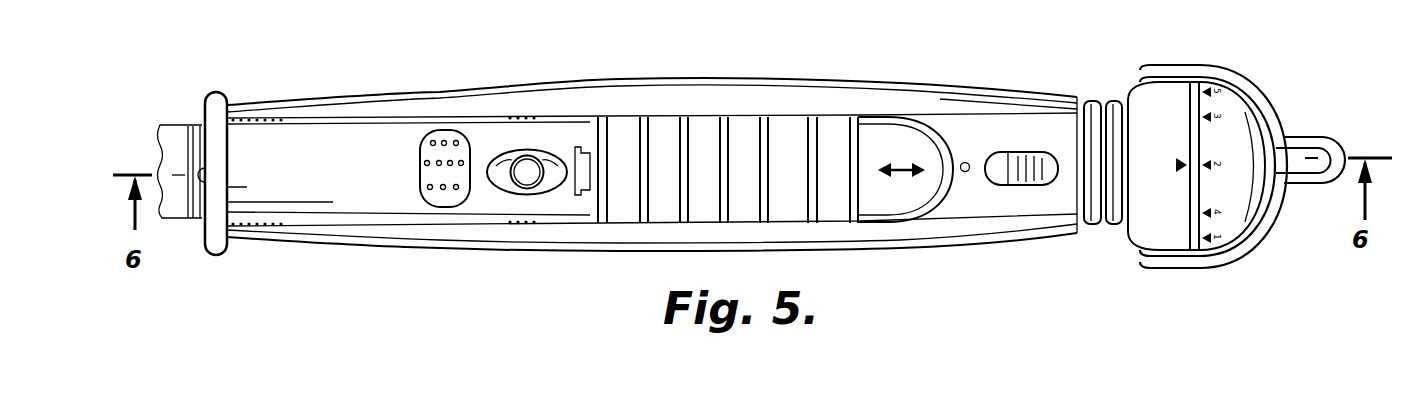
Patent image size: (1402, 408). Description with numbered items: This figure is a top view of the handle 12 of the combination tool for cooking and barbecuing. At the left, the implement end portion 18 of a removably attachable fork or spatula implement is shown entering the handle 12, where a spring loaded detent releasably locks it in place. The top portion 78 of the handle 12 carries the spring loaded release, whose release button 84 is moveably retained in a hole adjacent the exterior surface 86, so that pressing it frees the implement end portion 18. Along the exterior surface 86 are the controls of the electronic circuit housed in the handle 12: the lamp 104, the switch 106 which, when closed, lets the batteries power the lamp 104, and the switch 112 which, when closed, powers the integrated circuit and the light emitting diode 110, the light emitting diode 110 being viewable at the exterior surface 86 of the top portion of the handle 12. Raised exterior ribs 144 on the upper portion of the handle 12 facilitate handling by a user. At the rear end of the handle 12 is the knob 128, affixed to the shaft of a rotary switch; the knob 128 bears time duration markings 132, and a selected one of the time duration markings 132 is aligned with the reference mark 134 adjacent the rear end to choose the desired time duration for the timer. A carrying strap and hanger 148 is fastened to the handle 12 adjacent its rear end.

The handle 12 is at (974, 72).
The implement end portion 18 is at (172, 220).
The top portion 78 is at (425, 207).
The release button 84 is at (433, 143).
The exterior surface 86 is at (467, 137).
The lamp L1 104 is at (188, 158).
The switch S1 106 is at (528, 175).
The light emitting diode LED1 110 is at (968, 172).
The switch S2 112 is at (1038, 152).
The knob 128 is at (1270, 158).
The time duration markings 132 is at (1233, 113).
The reference mark 134 is at (1178, 168).
The raised exterior ribs 144 is at (687, 117).
The carrying strap and hanger 148 is at (1313, 187).